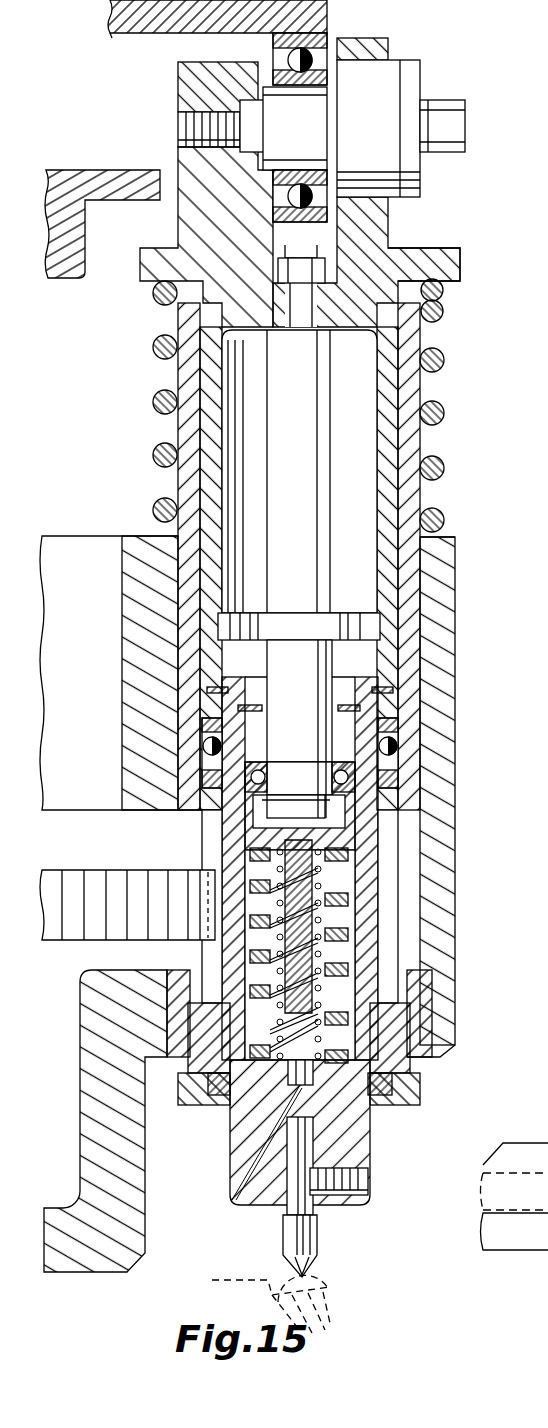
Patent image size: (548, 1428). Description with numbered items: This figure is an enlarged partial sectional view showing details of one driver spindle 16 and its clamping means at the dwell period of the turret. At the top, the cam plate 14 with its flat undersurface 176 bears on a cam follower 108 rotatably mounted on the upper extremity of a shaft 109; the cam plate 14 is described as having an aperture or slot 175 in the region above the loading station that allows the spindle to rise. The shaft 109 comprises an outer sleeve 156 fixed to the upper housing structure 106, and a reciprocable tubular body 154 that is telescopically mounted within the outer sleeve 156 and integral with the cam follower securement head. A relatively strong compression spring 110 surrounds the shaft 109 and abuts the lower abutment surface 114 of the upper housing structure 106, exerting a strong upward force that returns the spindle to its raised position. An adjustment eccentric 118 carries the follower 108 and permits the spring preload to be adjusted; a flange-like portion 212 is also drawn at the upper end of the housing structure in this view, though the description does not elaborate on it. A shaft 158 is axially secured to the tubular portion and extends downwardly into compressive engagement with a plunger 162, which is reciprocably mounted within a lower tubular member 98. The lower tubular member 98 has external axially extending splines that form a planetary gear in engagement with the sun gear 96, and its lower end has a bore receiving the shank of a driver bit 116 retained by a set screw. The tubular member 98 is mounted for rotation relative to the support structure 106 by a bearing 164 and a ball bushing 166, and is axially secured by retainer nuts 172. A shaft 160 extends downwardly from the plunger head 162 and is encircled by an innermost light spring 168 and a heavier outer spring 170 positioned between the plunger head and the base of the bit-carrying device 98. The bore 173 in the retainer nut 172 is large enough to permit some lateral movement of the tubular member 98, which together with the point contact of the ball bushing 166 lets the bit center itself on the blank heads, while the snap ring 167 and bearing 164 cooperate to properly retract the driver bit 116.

The cam plate 14 is at (330, 8).
The spindle 16 is at (165, 108).
The sun gear 96 is at (70, 870).
The lower tubular member 98 is at (225, 845).
The upper housing structure 106 is at (122, 560).
The cam follower 108 is at (273, 45).
The shaft 109 is at (420, 447).
The compression spring 110 is at (153, 352).
The lower abutment surface 114 is at (440, 525).
The driver bit 116 is at (283, 1238).
The adjustment eccentric 118 is at (410, 78).
The tubular body 154 is at (205, 318).
The outer sleeve 156 is at (185, 434).
The shaft 158 is at (333, 412).
The shaft 160 is at (300, 975).
The plunger 162 is at (345, 826).
The bearing 164 is at (335, 770).
The ball bushing 166 is at (392, 770).
The snap ring 167 is at (345, 705).
The light spring 168 is at (320, 878).
The heavier outer spring 170 is at (345, 900).
The retainer nut 172 is at (400, 1086).
The bore 173 is at (375, 1105).
The slot 175 is at (218, 1105).
The flat undersurface 176 is at (108, 38).
The flange 212 is at (460, 255).